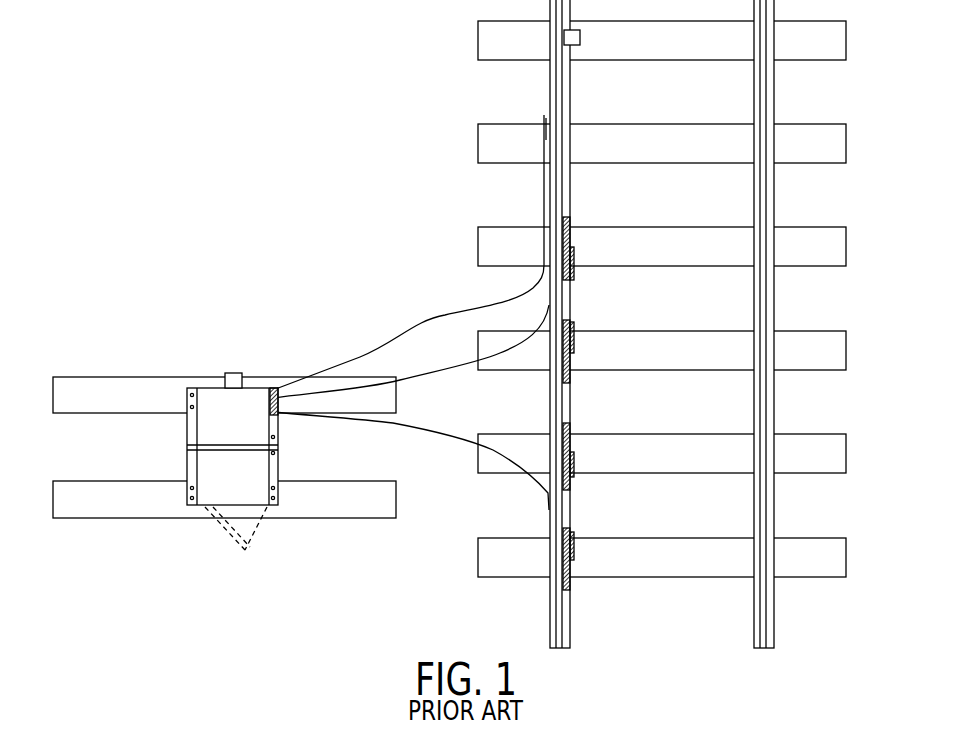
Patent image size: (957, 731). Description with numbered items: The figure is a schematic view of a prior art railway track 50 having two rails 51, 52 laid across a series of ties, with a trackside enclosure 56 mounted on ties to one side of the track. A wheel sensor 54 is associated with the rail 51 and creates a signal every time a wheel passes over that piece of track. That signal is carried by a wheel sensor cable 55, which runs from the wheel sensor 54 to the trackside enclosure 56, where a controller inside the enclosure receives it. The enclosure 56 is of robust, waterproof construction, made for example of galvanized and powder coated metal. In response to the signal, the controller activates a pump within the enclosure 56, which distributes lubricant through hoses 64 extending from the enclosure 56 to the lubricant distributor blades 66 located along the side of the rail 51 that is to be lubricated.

The railway track 50 is at (822, 200).
The rail 51 is at (565, 100).
The rail 52 is at (774, 100).
The wheel sensor 54 is at (545, 130).
The wheel sensor cable 55 is at (357, 353).
The trackside enclosure 56 is at (210, 392).
The hoses 64 is at (419, 382).
The lubricant distributor blades 66 is at (572, 240).